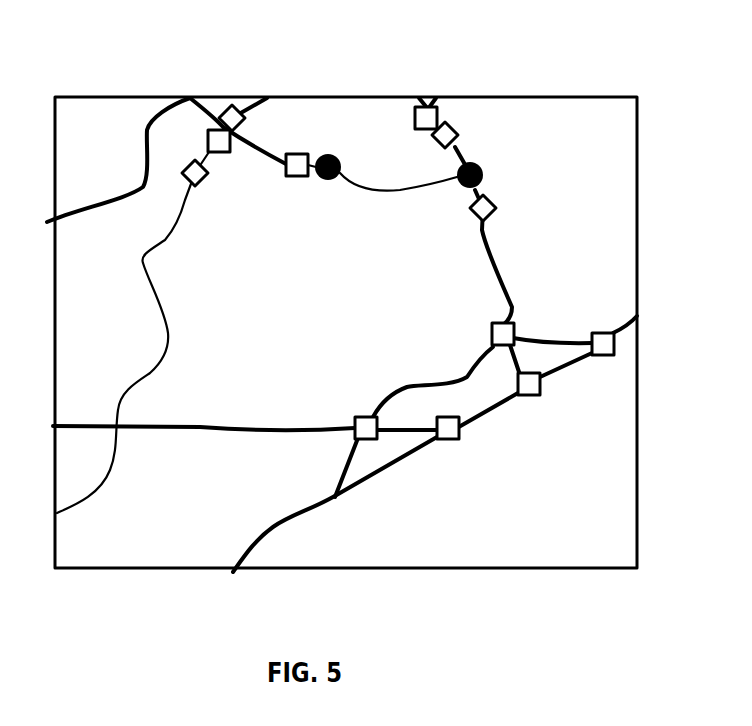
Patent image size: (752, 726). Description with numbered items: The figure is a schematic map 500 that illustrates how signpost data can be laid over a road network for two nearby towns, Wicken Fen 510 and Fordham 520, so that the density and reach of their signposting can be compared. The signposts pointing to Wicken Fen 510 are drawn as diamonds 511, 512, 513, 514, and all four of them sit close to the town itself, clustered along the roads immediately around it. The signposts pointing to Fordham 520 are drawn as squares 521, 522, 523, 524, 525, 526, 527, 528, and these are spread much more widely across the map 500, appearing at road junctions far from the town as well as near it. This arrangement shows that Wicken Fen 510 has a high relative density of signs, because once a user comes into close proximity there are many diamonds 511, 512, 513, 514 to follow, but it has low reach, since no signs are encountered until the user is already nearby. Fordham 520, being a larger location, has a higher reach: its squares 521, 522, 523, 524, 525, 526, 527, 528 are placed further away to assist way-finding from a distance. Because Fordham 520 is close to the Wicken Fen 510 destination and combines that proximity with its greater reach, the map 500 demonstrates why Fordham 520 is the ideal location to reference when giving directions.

The map 500 is at (53, 130).
The Wicken Fen 510 is at (334, 156).
The Fordham 520 is at (481, 170).
The signpost to Wicken Fen 511 is at (188, 167).
The signpost to Wicken Fen 512 is at (236, 107).
The signpost to Wicken Fen 513 is at (455, 132).
The signpost to Wicken Fen 514 is at (496, 206).
The signpost to Fordham 521 is at (212, 131).
The signpost to Fordham 522 is at (299, 154).
The signpost to Fordham 523 is at (432, 106).
The signpost to Fordham 524 is at (513, 325).
The signpost to Fordham 525 is at (614, 350).
The signpost to Fordham 526 is at (541, 387).
The signpost to Fordham 527 is at (374, 438).
The signpost to Fordham 528 is at (459, 432).